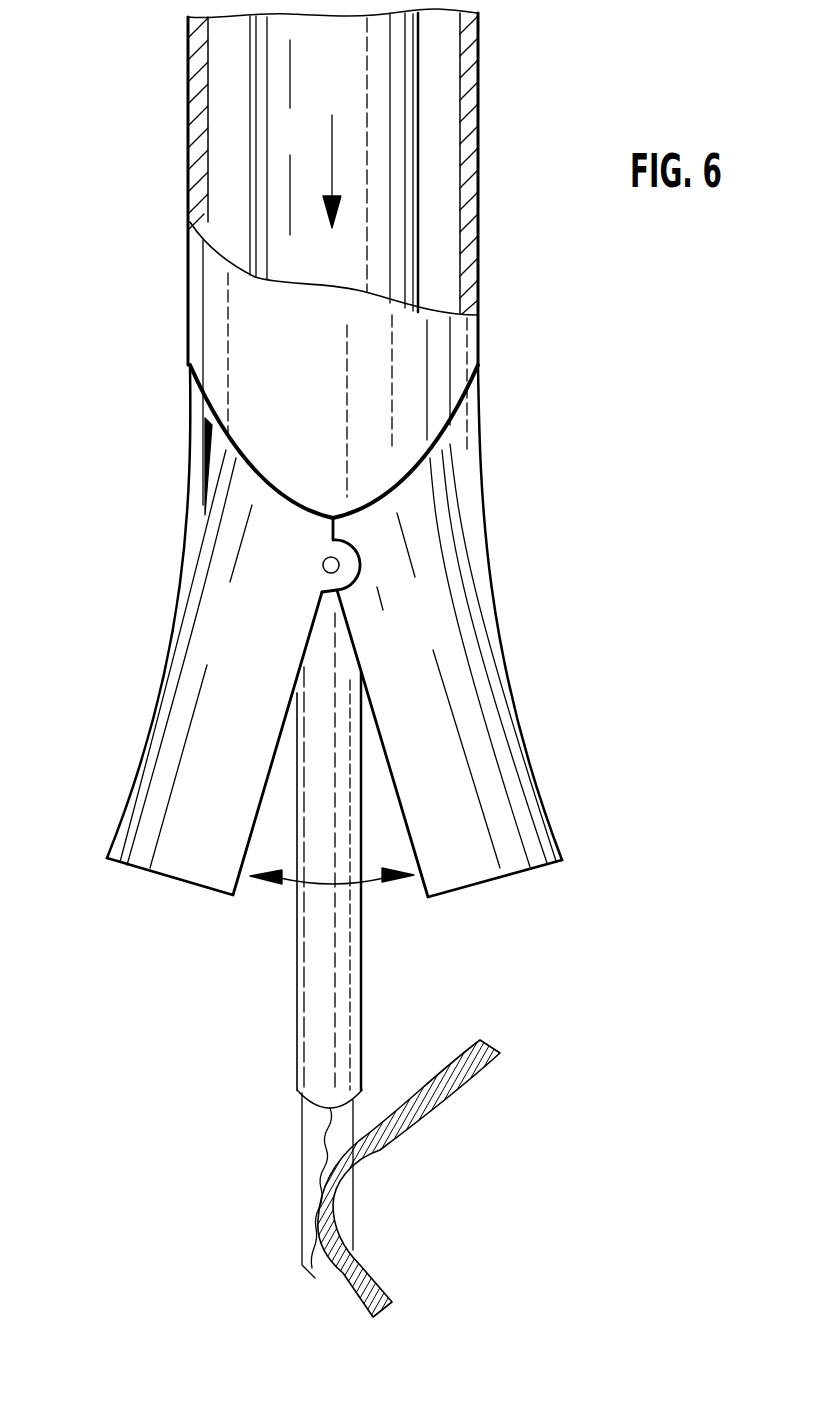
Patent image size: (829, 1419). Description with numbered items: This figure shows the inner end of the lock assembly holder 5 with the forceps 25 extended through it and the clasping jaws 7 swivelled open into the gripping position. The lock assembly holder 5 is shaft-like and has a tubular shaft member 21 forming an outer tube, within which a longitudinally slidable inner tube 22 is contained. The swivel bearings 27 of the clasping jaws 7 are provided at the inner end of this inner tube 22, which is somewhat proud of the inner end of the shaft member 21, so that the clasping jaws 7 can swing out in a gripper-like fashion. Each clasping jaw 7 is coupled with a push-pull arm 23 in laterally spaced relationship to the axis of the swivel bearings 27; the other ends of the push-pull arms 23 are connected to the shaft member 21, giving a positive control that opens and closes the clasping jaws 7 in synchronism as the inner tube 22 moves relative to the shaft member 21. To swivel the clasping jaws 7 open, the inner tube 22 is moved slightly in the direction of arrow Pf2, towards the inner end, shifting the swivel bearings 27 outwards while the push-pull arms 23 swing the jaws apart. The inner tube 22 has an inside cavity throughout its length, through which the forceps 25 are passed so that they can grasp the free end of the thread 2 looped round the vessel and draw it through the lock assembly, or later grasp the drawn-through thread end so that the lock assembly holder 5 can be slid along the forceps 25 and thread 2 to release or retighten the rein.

The lock assembly holder 5 is at (140, 315).
The inner tube 22 is at (400, 80).
The tubular shaft member 21 is at (452, 342).
The push-pull arms 23 is at (195, 468).
The clasping jaws 7 is at (140, 797).
The swivel bearings 27 is at (326, 562).
The forceps 25 is at (300, 992).
The thread 2 is at (457, 1088).
The arrow Pf 2 Pf2 is at (332, 133).